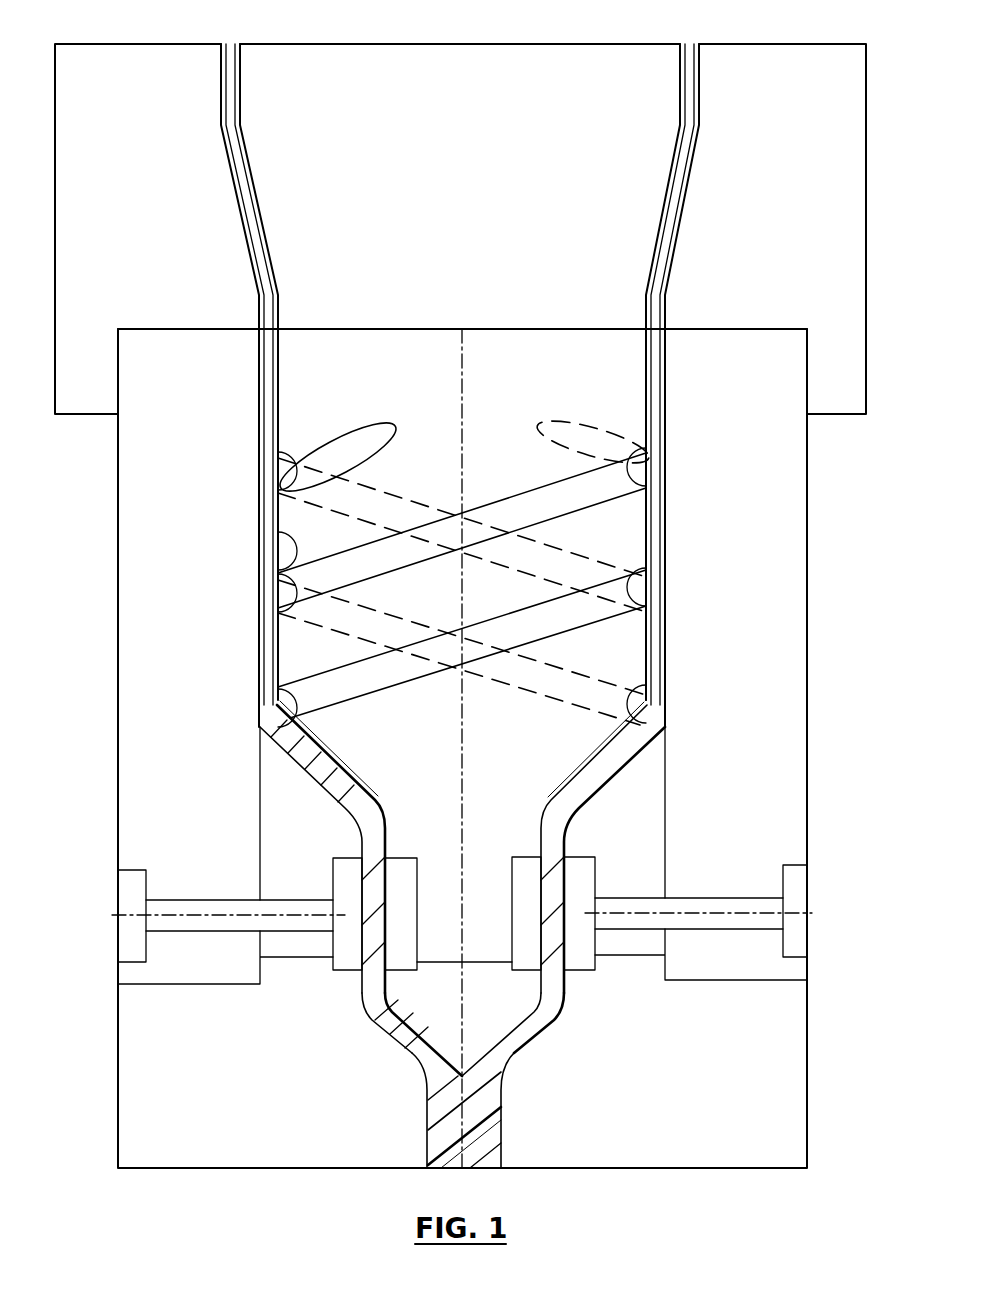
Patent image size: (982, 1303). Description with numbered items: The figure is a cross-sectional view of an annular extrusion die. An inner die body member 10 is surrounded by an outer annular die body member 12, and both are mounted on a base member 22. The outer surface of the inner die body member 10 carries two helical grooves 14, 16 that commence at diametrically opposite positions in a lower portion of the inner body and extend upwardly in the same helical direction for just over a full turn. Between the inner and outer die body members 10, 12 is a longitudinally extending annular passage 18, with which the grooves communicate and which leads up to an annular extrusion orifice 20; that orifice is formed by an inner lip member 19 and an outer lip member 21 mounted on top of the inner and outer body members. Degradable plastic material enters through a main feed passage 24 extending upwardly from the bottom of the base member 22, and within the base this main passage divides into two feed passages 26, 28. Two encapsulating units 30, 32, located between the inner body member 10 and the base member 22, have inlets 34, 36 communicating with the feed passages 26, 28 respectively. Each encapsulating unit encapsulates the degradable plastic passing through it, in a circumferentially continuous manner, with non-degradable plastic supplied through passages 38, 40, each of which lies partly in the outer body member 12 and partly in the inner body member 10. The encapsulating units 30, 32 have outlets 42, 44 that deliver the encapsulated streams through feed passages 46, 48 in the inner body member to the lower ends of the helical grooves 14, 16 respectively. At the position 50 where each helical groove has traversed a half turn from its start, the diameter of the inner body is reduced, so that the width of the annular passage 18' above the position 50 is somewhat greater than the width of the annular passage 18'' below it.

The inner die body member 10 is at (363, 363).
The outer annular die body member 12 is at (215, 342).
The helical groove 14 is at (328, 685).
The helical groove 16 is at (560, 507).
The annular passage 18 is at (240, 385).
The annular passage above position 50 18' is at (695, 425).
The annular passage below position 50 18'' is at (697, 623).
The inner lip member 19 is at (418, 44).
The annular extrusion orifice 20 is at (692, 44).
The outer lip member 21 is at (165, 44).
The base member 22 is at (160, 1063).
The main feed passage 24 is at (462, 1138).
The feed passage 26 is at (417, 1047).
The feed passage 28 is at (513, 1048).
The encapsulating unit 30 is at (348, 880).
The encapsulating unit 32 is at (527, 897).
The inlet 34 is at (362, 972).
The inlet 36 is at (570, 968).
The passage 38 is at (228, 900).
The passage 40 is at (738, 908).
The outlet 42 is at (387, 857).
The outlet 44 is at (568, 853).
The feed passage 46 is at (344, 760).
The feed passage 48 is at (592, 752).
The position 50 is at (276, 530).